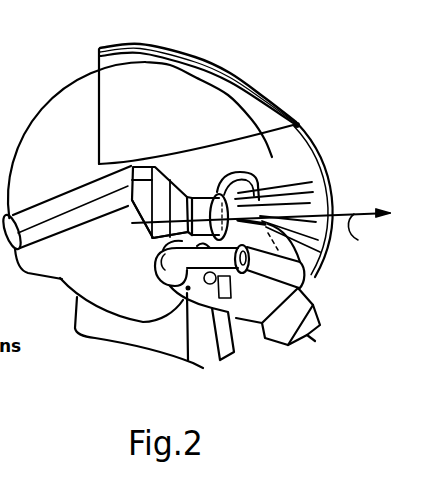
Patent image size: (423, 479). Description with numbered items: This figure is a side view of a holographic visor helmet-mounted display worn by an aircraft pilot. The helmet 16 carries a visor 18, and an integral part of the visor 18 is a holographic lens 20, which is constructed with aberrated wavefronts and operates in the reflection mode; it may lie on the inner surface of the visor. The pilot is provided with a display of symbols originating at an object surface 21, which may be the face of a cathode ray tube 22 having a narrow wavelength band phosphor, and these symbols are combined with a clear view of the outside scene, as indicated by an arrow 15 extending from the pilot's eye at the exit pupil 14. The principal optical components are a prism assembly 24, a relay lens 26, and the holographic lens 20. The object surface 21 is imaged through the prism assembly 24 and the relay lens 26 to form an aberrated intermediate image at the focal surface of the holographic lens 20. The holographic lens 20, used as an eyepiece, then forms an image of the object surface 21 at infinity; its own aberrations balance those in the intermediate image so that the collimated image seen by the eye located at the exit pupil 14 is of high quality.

The exit pupil 14 is at (253, 181).
The arrow 15 is at (362, 233).
The helmet 16 is at (40, 110).
The visor 18 is at (300, 130).
The holographic lens 20 is at (318, 204).
The object surface 21 is at (117, 170).
The cathode ray tube 22 is at (36, 244).
The prism assembly 24 is at (150, 212).
The relay lens 26 is at (219, 193).